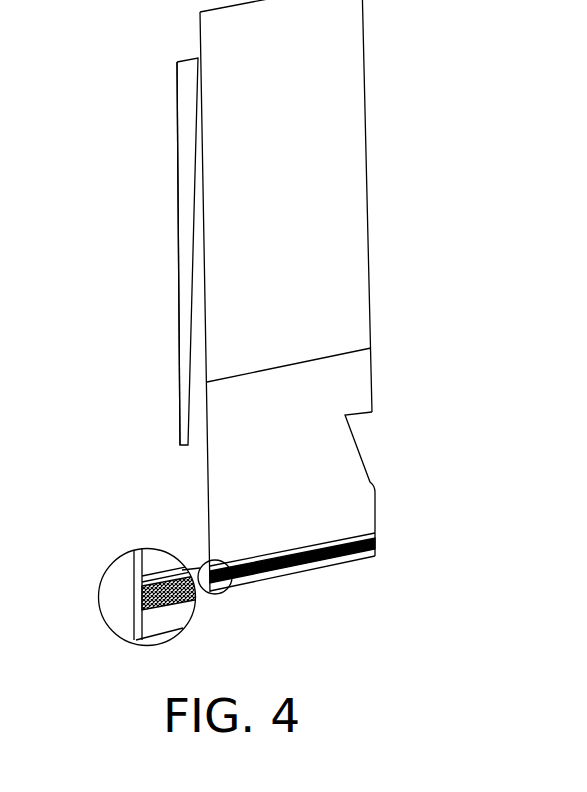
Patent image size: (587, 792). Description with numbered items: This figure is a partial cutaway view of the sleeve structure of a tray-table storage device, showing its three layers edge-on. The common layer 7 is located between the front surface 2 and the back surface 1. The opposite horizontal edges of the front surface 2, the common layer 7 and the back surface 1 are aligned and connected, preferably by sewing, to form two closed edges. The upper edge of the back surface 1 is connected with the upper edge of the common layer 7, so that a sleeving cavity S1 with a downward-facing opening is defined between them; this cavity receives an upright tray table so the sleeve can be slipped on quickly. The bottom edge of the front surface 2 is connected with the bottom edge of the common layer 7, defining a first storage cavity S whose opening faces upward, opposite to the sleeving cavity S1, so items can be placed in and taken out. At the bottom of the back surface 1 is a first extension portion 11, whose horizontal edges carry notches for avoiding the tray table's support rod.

The back surface 1 is at (340, 280).
The first extension portion 11 is at (340, 497).
The common layer 7 is at (192, 240).
The front surface 2 is at (178, 295).
The first storage cavity S is at (192, 157).
The sleeving cavity S1 is at (195, 368).